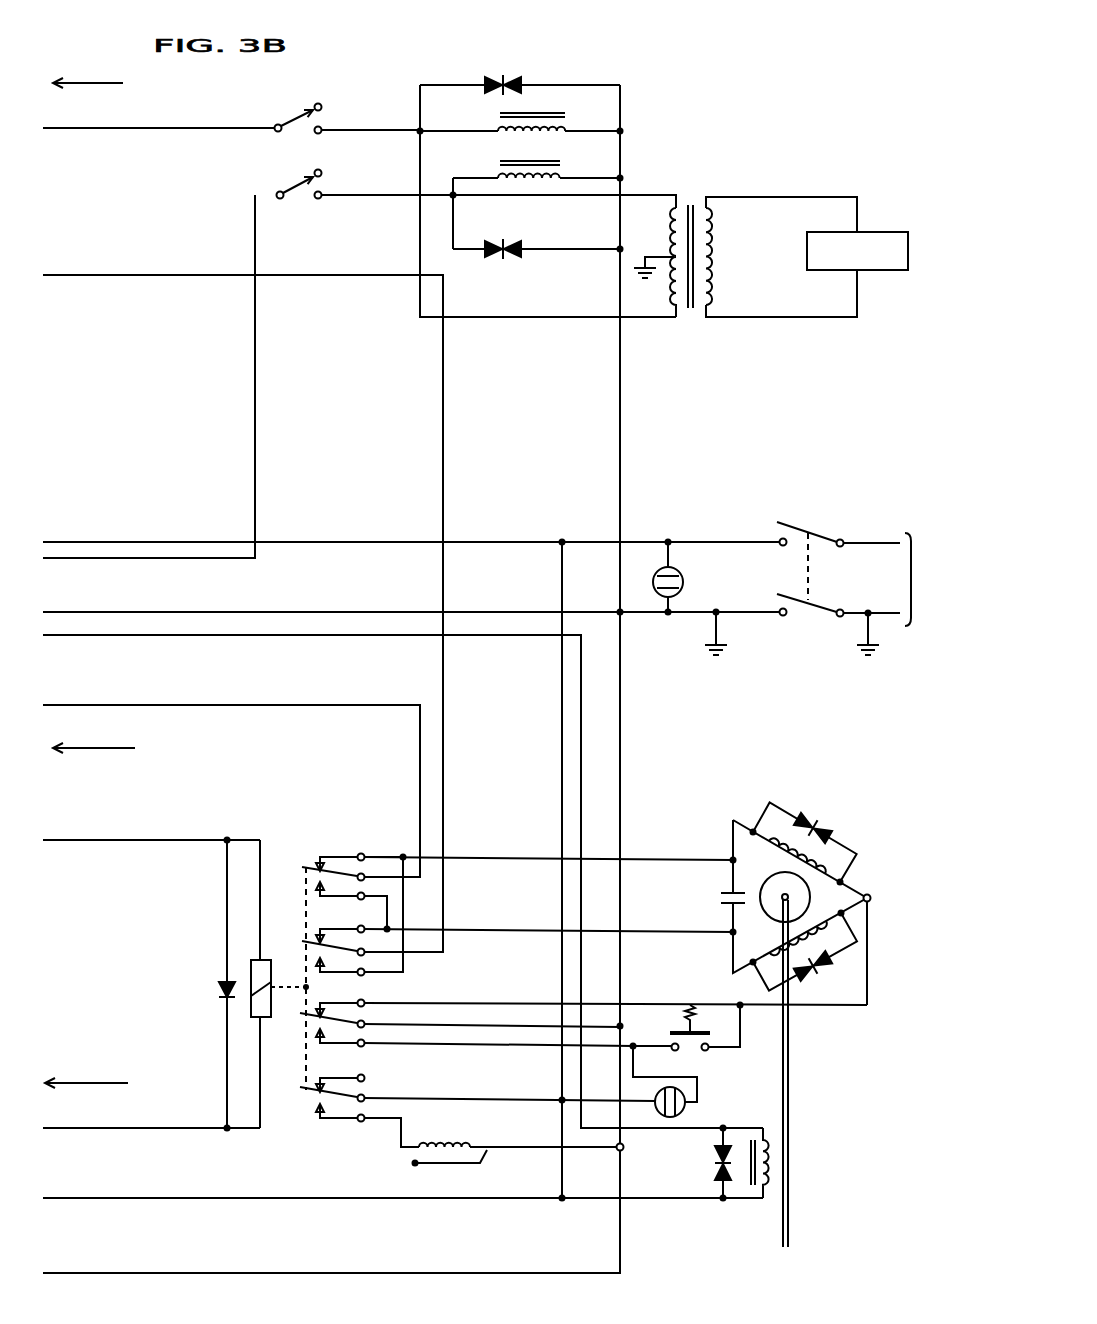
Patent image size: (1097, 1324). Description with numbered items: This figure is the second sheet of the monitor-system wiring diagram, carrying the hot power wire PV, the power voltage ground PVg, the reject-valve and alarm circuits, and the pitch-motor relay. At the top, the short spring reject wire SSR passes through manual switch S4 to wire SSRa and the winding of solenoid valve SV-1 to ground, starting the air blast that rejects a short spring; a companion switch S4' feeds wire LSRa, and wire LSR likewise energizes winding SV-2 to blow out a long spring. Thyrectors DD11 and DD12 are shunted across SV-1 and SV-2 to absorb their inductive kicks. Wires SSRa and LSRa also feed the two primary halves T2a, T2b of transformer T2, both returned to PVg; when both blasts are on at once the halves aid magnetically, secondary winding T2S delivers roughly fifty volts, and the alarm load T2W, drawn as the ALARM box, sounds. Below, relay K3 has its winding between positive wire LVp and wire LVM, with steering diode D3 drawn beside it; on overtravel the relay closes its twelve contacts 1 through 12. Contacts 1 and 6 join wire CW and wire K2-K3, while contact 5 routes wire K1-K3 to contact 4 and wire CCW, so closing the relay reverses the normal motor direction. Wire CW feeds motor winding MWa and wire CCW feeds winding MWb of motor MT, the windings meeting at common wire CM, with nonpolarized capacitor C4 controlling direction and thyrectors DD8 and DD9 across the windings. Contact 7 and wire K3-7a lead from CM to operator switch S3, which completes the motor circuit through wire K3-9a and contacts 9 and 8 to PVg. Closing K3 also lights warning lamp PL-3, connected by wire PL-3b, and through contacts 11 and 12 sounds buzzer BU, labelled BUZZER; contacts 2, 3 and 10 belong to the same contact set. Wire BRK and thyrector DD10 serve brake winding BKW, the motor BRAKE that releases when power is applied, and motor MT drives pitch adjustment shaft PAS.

The short spring reject wire SSR is at (100, 126).
The manual switch S4 is at (294, 116).
The short spring reject wire SSRa is at (370, 120).
The switch S4 prime S4' is at (294, 182).
The long spring reject wire LSRa is at (498, 191).
The wire K1-K3 is at (120, 274).
The thyrector DD11 is at (510, 75).
The solenoid valve winding SV-1 is at (582, 112).
The solenoid valve winding SV-2 is at (585, 160).
The thyrector DD12 is at (489, 256).
The transformer T2 is at (692, 198).
The primary winding half T2a is at (673, 235).
The primary winding half T2b is at (673, 287).
The secondary winding T2S is at (712, 265).
The alarm load T2W is at (893, 268).
The alarm ALARM is at (857, 251).
The power voltage ground PVg is at (620, 412).
The hot power wire PV is at (92, 539).
The long spring reject wire LSR is at (106, 558).
The brake line BRK is at (106, 630).
The wire K2-K3 is at (120, 702).
The wire LVM is at (98, 838).
The positive wire LVp is at (98, 1126).
The steering diode D3 is at (215, 984).
The relay K3 is at (278, 984).
The relay contact 1 is at (359, 853).
The relay contact 2 is at (361, 868).
The relay contact 3 is at (351, 902).
The relay contact 4 is at (340, 925).
The relay contact 5 is at (372, 943).
The relay contact 6 is at (359, 916).
The relay contact 7 is at (340, 999).
The relay contact 8 is at (460, 1015).
The relay contact 9 is at (340, 1034).
The relay contact 10 is at (340, 1074).
The relay contact 11 is at (477, 1089).
The relay contact 12 is at (367, 1122).
The wire CW is at (468, 866).
The wire CCW is at (463, 938).
The wire K3-7a is at (458, 1012).
The wire K3-9a is at (458, 1052).
The buzzer BU is at (472, 1134).
The buzzer BUZZER is at (451, 1169).
The motor MT is at (785, 897).
The pitch adjustment shaft PAS is at (790, 1052).
The capacitor C4 is at (720, 907).
The motor winding MWa is at (826, 866).
The thyrector DD8 is at (833, 818).
The motor winding MWb is at (768, 945).
The thyrector DD9 is at (826, 972).
The common wire CM is at (885, 946).
The switch S3 is at (664, 1042).
The pilot lamp line PL-3b is at (690, 1066).
The warning light PL-3 is at (689, 1103).
The thyrector DD10 is at (717, 1165).
The motor brake winding BKW is at (768, 1164).
The motor brake BRAKE is at (745, 1211).